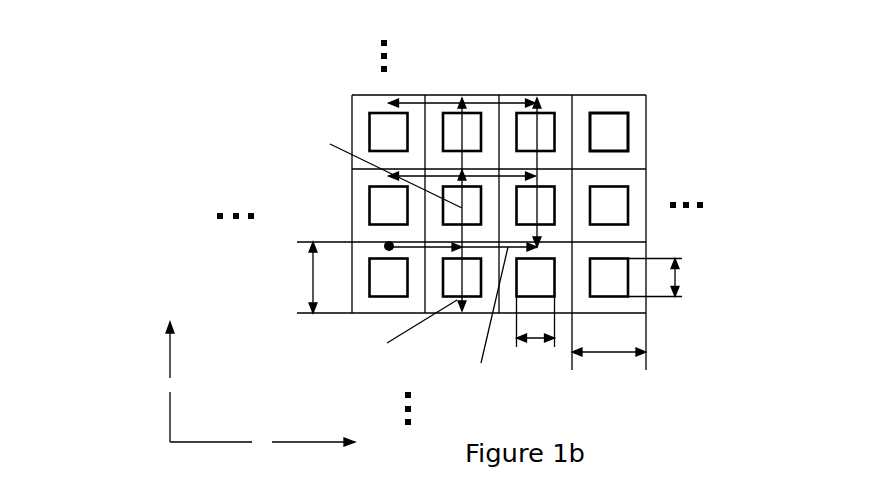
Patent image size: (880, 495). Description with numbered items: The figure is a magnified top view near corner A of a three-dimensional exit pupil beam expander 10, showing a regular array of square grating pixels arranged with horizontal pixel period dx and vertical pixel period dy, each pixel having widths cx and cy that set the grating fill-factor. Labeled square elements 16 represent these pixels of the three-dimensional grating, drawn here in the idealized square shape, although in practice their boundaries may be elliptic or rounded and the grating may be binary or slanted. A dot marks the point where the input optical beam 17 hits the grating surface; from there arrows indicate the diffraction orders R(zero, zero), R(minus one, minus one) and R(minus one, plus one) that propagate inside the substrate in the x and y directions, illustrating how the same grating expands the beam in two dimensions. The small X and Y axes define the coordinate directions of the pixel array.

The 3-dimensional exit pupil beam expander 10 is at (708, 105).
The pixel (photosensitive element) 16 is at (612, 113).
The input optical beam 17 is at (389, 246).